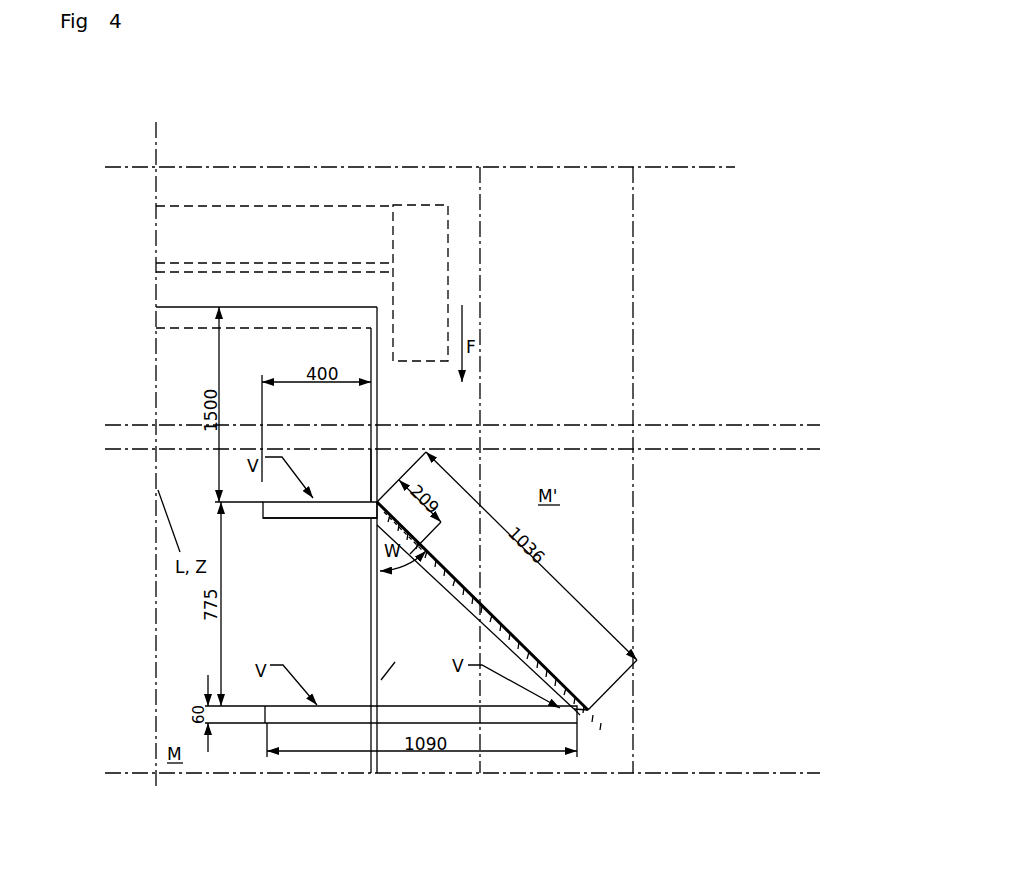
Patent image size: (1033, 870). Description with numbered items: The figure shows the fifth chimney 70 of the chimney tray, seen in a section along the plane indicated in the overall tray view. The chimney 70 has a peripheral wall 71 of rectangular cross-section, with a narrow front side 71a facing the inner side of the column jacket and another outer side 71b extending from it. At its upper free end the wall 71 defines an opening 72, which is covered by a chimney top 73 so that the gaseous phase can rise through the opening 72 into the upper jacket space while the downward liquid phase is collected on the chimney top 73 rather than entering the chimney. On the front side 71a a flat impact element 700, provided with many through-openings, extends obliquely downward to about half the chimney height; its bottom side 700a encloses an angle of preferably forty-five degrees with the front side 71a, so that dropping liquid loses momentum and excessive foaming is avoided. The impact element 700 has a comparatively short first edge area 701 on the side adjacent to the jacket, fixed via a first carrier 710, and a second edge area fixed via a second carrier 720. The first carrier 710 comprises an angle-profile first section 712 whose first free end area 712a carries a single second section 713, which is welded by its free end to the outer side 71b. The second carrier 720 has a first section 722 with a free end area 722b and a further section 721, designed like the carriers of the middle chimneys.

The fifth chimney 70 is at (350, 348).
The peripheral wall 71 is at (333, 415).
The front side 71a is at (381, 680).
The other outer side 71b is at (357, 467).
The opening 72 is at (233, 305).
The chimney top 73 is at (315, 227).
The flat impact element 700 is at (507, 625).
The bottom side 700a is at (447, 574).
The first edge area 701 is at (524, 640).
The first carrier 710 is at (290, 517).
The first section 712 is at (371, 527).
The first free end area 712a is at (377, 525).
The second section 713 is at (330, 512).
The second carrier 720 is at (397, 723).
The section of second carrier 721 is at (438, 712).
The first section 722 is at (465, 588).
The free end area 722b is at (577, 713).